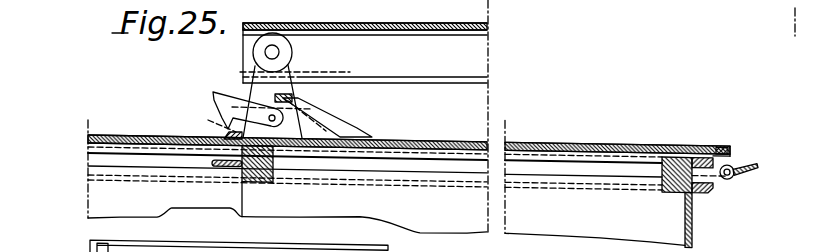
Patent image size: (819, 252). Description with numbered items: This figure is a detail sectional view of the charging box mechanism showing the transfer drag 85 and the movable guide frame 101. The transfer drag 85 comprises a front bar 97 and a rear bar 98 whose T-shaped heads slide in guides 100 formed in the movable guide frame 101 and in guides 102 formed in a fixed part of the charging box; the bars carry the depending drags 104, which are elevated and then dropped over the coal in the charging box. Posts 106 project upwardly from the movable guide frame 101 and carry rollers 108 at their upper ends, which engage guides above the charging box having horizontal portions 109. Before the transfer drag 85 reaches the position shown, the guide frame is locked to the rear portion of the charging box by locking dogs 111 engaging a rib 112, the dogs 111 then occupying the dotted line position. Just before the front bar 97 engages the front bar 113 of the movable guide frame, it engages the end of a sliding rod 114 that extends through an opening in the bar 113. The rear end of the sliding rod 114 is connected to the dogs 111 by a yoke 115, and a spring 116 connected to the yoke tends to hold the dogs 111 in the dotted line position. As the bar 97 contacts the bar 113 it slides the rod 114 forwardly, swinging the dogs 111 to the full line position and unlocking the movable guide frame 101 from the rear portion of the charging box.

The transfer drag 85 is at (707, 222).
The front bar 97 is at (672, 193).
The rear bar 98 is at (258, 182).
The guides 100 is at (583, 194).
The movable guide frame 101 is at (583, 136).
The guides 102 is at (267, 183).
The depending drags 104 is at (386, 227).
The posts 106 is at (260, 87).
The rollers 108 is at (292, 54).
The horizontal portions 109 is at (378, 47).
The locking dogs 111 is at (213, 108).
The rib 112 is at (225, 136).
The front bar 113 is at (725, 194).
The sliding rod 114 is at (409, 131).
The yoke 115 is at (335, 124).
The spring 116 is at (294, 99).